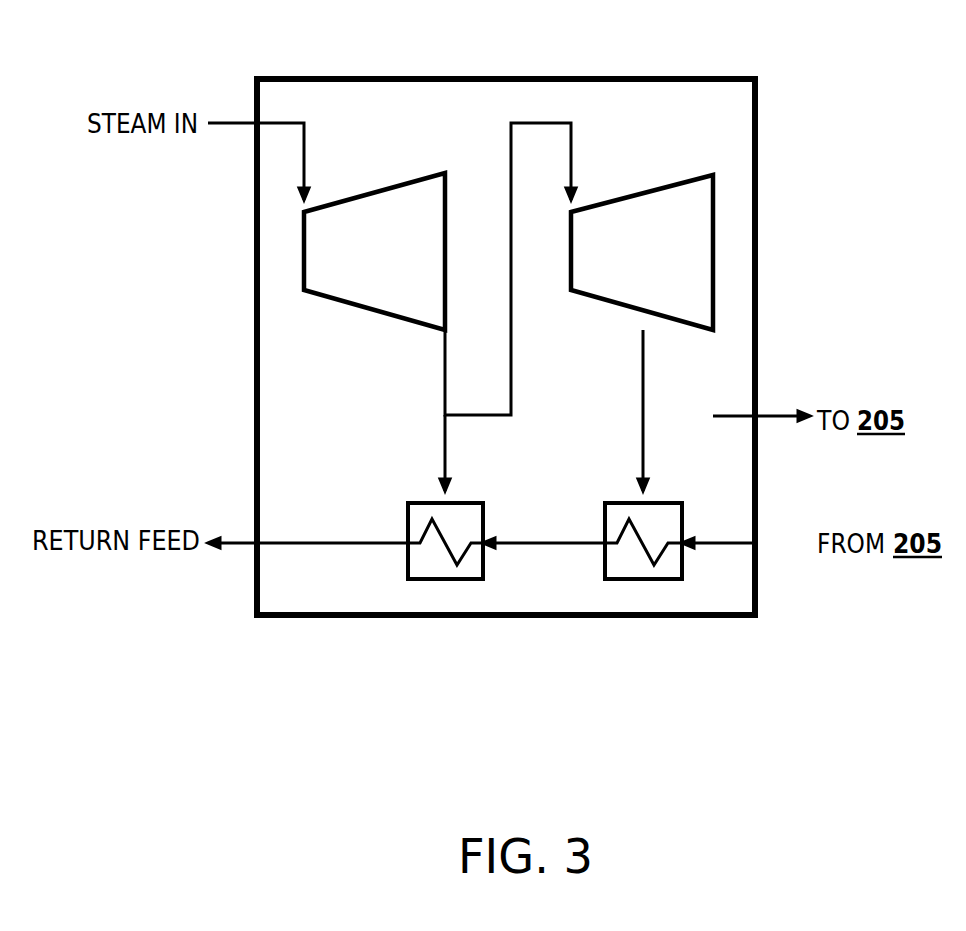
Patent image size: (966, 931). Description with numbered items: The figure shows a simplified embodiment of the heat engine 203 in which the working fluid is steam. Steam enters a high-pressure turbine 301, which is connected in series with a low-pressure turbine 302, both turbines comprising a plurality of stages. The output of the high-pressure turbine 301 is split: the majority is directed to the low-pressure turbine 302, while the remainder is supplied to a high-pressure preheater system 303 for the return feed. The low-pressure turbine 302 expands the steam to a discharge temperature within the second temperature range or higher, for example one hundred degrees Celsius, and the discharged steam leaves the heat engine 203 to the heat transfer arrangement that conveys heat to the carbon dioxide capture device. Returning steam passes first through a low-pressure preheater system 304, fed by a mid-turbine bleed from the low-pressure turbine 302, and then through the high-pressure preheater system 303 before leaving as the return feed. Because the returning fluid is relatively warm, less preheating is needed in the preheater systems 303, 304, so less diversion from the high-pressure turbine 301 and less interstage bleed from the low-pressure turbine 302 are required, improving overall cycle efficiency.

The heat engine 203 is at (723, 76).
The high-pressure turbine 301 is at (398, 268).
The low-pressure turbine 302 is at (665, 268).
The high-pressure preheater system 303 is at (418, 502).
The low-pressure preheater system 304 is at (614, 502).